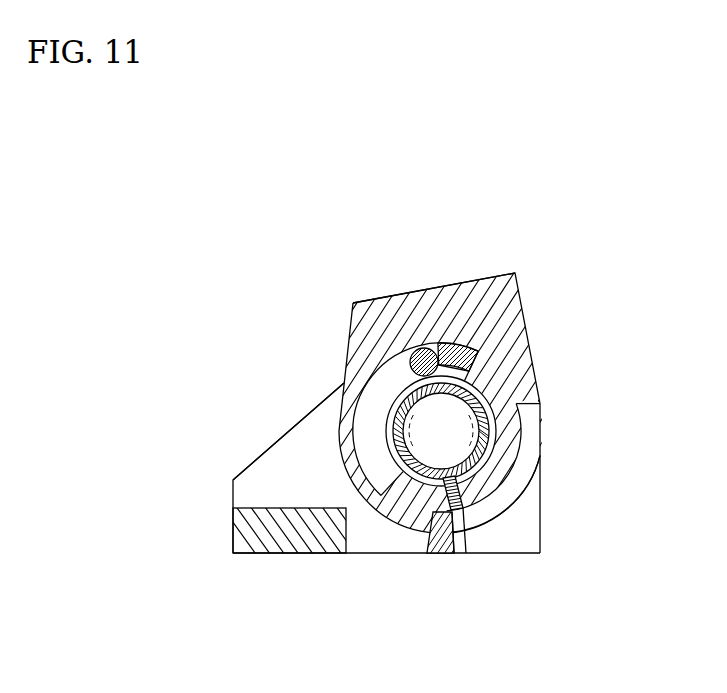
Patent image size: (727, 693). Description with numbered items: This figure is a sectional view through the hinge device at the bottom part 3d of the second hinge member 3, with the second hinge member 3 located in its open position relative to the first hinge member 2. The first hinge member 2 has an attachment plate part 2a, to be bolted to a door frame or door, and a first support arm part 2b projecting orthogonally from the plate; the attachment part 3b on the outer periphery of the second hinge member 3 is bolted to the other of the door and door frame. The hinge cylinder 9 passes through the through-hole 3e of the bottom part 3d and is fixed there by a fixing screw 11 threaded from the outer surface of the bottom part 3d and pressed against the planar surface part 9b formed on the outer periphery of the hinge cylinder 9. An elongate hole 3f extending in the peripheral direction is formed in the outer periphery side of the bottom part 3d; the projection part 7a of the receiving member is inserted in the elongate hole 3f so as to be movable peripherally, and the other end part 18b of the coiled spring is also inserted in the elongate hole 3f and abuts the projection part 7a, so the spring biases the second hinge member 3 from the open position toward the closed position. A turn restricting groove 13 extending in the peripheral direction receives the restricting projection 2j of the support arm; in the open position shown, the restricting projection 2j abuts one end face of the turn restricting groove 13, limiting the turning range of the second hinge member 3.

The first hinge member 2 is at (374, 554).
The attachment plate part 2a is at (285, 543).
The first support arm part 2b is at (275, 466).
The restricting projection 2j is at (444, 555).
The second hinge member 3 is at (523, 289).
The attachment part 3b is at (424, 291).
The bottom part 3d is at (513, 424).
The through-hole 3e is at (537, 398).
The elongate hole 3f is at (370, 430).
The projection part 7a is at (464, 342).
The hinge cylinder 9 is at (483, 398).
The planar surface part 9b is at (459, 488).
The fixing screw 11 is at (463, 555).
The turn restricting groove 13 is at (528, 452).
The other end part of the coiled spring 18b is at (424, 347).